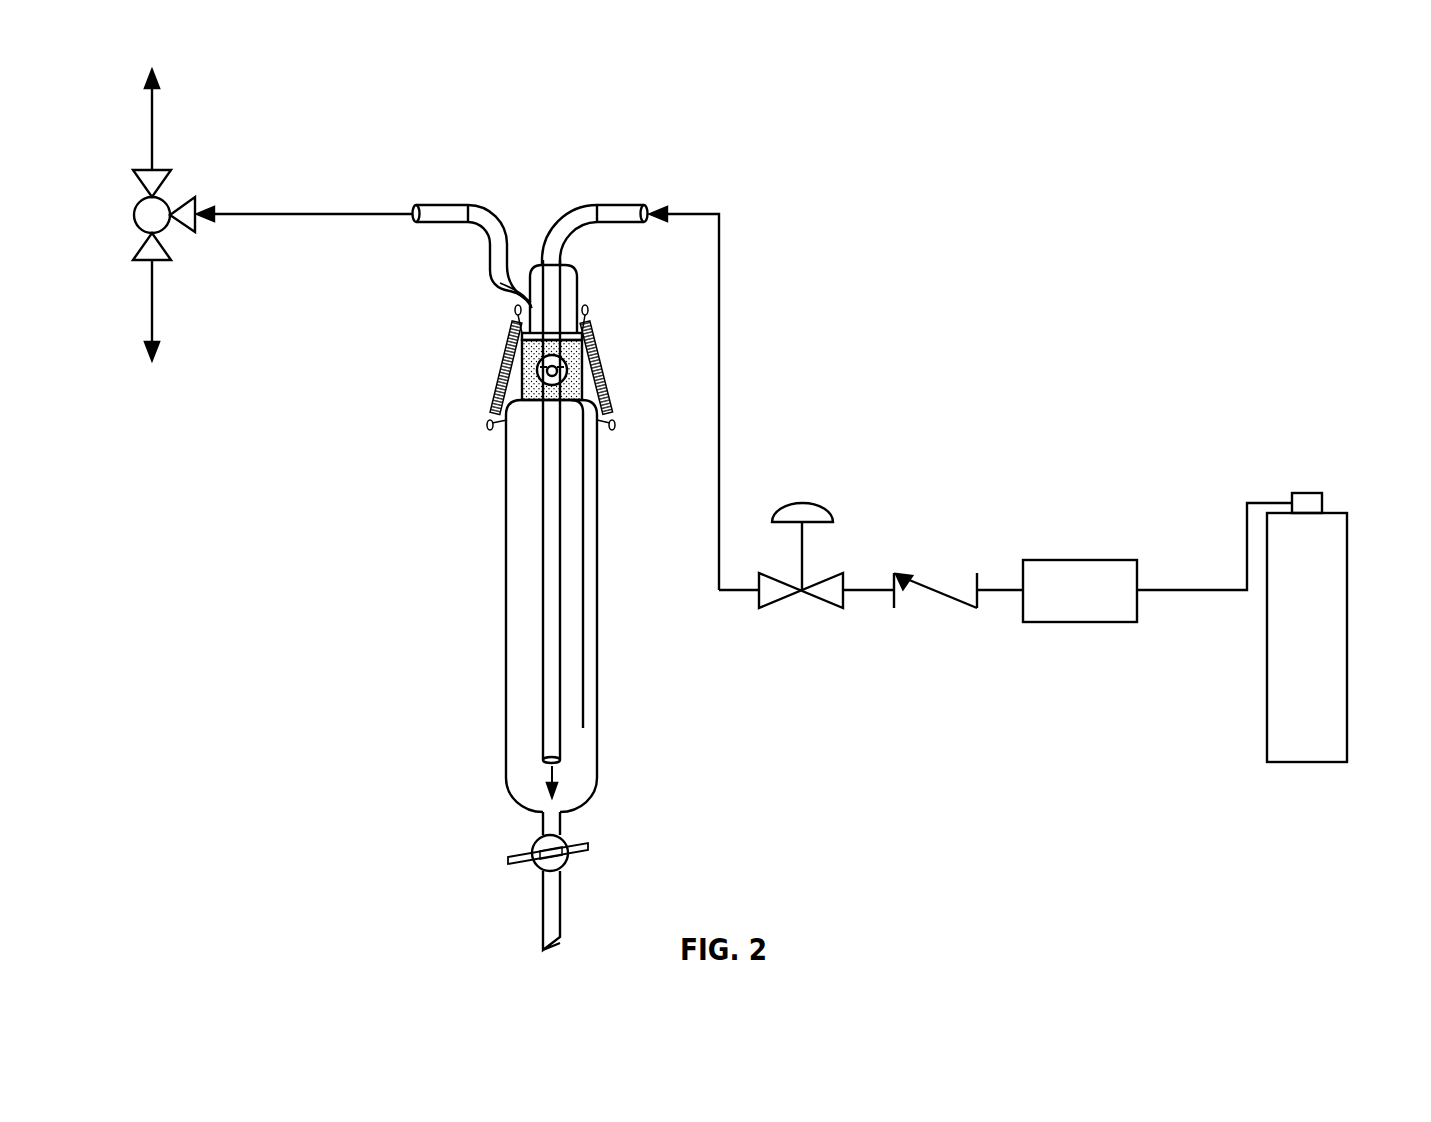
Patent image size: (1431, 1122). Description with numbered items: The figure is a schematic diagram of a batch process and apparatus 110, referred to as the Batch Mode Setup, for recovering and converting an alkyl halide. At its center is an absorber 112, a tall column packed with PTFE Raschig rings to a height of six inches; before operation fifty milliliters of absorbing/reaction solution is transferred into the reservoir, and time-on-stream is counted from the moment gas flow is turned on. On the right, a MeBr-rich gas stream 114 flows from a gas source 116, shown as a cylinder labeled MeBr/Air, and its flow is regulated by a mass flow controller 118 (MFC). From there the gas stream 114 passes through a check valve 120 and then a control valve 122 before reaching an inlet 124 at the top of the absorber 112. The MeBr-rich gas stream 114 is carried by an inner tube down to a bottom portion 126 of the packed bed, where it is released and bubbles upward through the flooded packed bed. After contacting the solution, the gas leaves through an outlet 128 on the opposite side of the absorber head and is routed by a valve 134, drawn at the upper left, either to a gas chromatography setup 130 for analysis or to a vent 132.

The batch process and apparatus 110 is at (1105, 142).
The absorber 112 is at (597, 698).
The MeBr-rich gas stream 114 is at (719, 370).
The gas source 116 is at (1347, 637).
The mass flow controller 118 is at (1080, 560).
The check valve 120 is at (965, 605).
The control valve 122 is at (828, 602).
The inlet 124 is at (622, 205).
The bottom portion 126 is at (517, 773).
The outlet 128 is at (440, 205).
The gas chromatography setup 130 is at (152, 301).
The vent 132 is at (152, 119).
The valve 134 is at (185, 198).